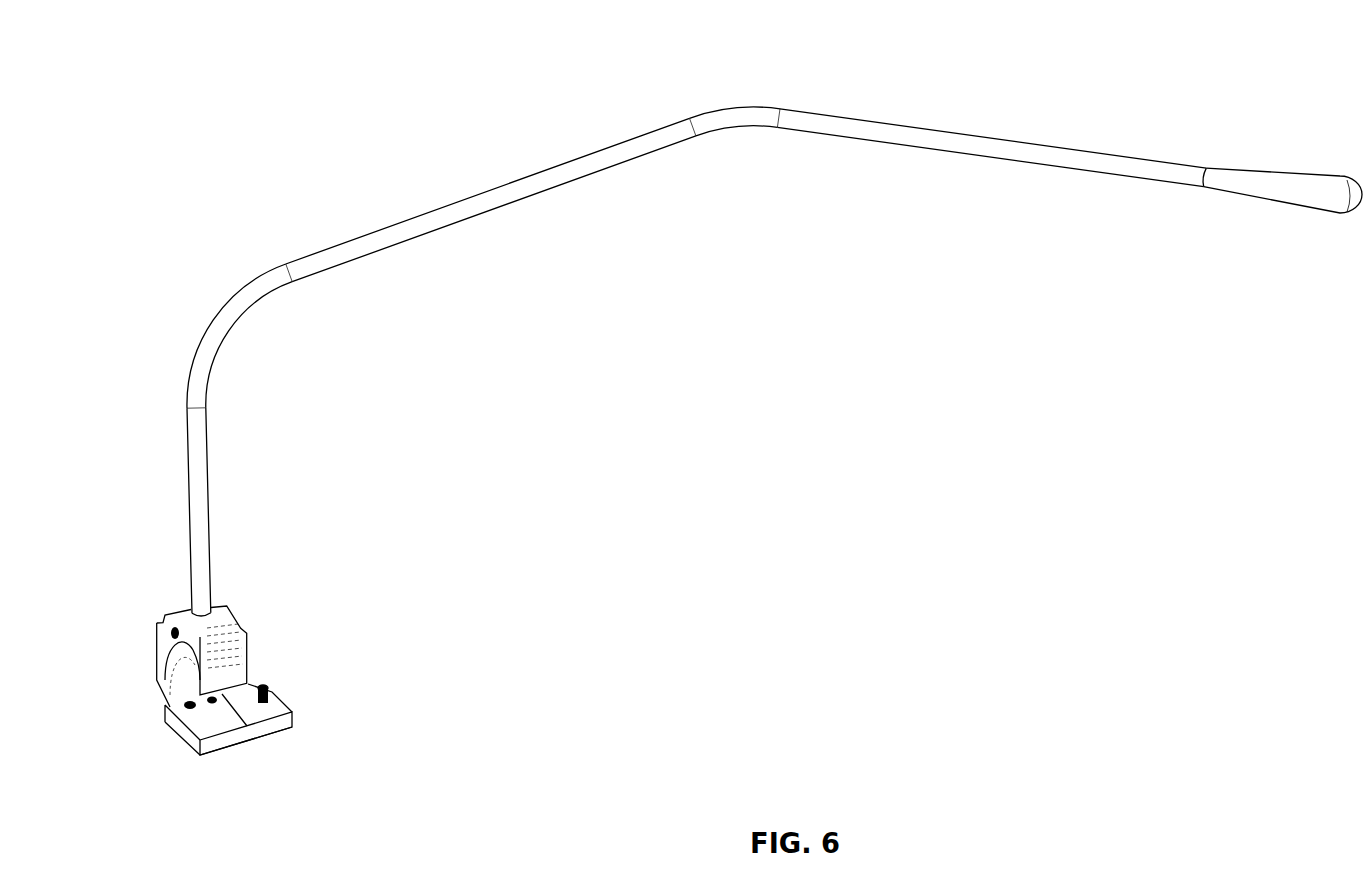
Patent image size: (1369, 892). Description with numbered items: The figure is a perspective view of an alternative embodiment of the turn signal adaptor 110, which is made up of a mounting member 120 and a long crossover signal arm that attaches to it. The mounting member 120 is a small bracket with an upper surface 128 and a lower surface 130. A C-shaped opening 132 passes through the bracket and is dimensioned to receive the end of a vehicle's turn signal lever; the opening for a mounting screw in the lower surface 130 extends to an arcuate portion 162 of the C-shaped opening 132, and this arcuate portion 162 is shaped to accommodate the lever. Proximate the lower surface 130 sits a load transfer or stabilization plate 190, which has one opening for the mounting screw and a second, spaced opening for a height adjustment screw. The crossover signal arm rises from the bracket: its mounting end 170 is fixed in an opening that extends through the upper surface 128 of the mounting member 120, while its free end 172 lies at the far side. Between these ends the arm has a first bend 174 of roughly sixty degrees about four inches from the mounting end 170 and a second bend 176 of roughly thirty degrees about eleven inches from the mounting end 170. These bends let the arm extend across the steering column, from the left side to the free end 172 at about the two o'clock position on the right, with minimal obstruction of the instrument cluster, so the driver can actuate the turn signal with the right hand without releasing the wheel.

The turn signal adaptor 110 is at (883, 92).
The mounting member 120 is at (252, 616).
The upper surface 128 is at (222, 613).
The lower surface 130 is at (178, 729).
The C-shaped opening 132 is at (180, 676).
The arcuate portion 162 is at (163, 672).
The mounting end 170 is at (191, 607).
The free end 172 is at (1175, 162).
The first bend 174 is at (244, 311).
The second bend 176 is at (731, 123).
The stabilization plate 190 is at (256, 742).